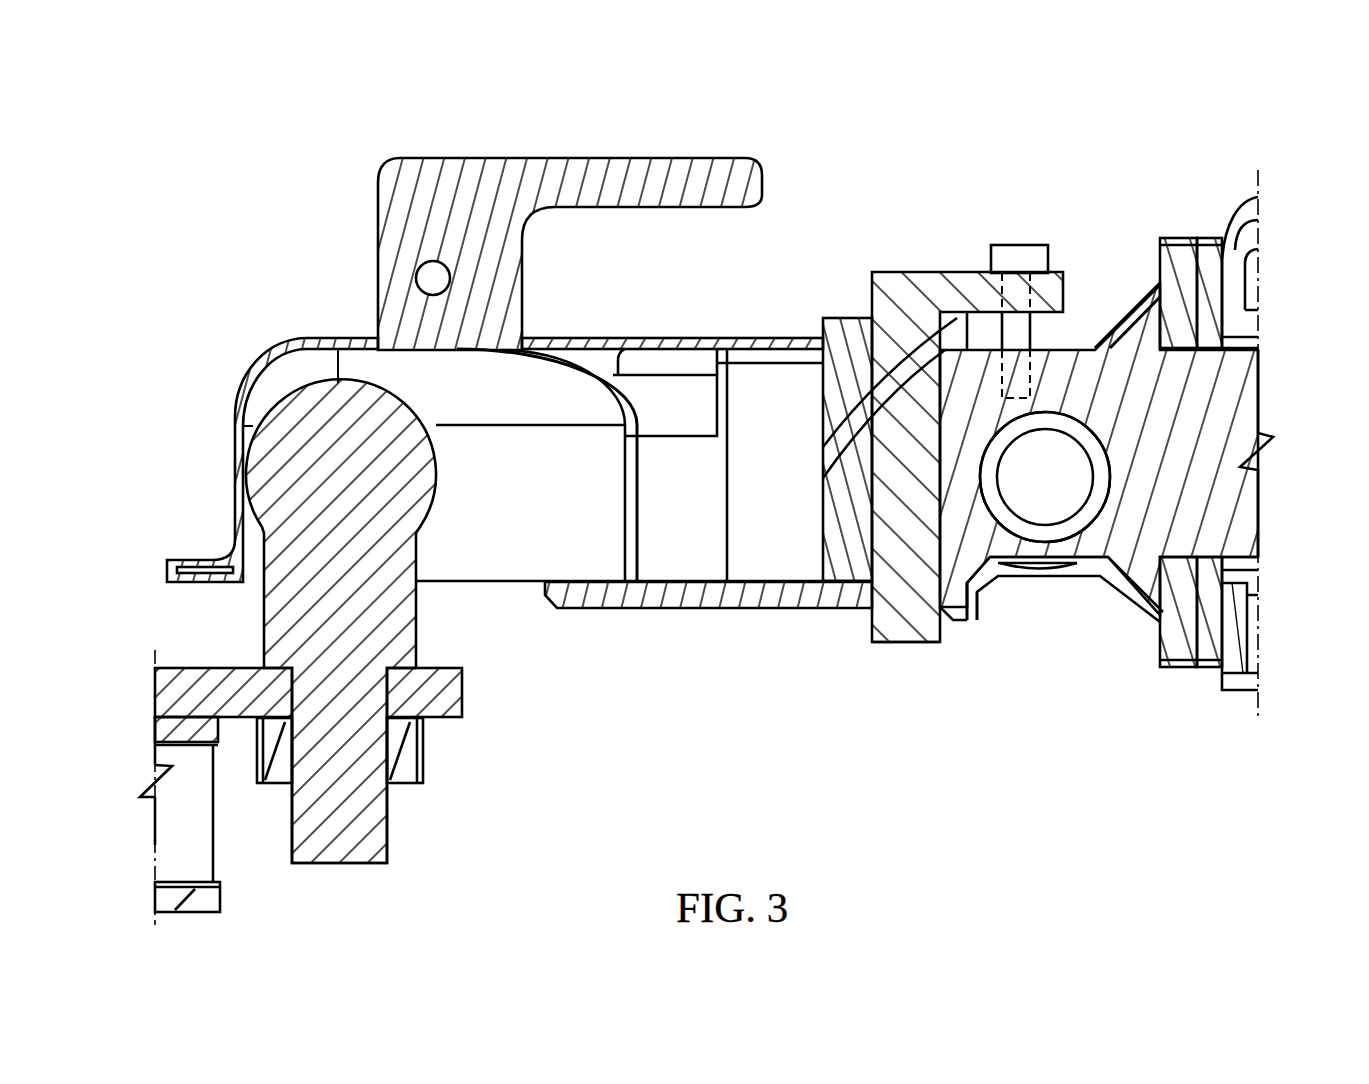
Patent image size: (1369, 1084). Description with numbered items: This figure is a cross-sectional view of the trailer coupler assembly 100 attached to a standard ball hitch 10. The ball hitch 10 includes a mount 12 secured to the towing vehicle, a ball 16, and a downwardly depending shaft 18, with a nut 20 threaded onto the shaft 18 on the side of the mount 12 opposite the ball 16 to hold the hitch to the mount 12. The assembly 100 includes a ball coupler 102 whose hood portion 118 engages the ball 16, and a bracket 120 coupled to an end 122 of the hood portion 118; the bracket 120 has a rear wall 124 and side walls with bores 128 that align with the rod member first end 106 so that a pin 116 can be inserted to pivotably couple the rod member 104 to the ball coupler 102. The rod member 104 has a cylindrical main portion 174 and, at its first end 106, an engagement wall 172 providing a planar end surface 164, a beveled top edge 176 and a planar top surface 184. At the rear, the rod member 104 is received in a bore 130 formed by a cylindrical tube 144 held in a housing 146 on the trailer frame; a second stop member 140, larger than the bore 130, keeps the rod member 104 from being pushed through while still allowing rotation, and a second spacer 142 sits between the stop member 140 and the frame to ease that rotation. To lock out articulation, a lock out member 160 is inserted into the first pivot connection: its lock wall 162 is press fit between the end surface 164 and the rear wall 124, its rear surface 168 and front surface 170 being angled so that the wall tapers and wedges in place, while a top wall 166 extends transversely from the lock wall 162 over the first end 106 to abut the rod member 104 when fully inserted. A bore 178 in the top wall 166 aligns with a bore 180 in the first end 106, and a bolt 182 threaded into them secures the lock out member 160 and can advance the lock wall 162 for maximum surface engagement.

The ball hitch 10 is at (135, 658).
The mount 12 is at (175, 692).
The ball 16 is at (300, 455).
The shaft 18 is at (338, 862).
The nut 20 is at (400, 775).
The trailer coupler assembly 100 is at (783, 110).
The ball coupler 102 is at (300, 340).
The rod member 104 is at (1247, 415).
The first end 106 is at (1000, 548).
The pin 116 is at (1065, 475).
The hood portion 118 is at (262, 372).
The bracket 120 is at (843, 323).
The end 122 is at (720, 338).
The rear wall 124 is at (823, 338).
The bores 128 is at (1077, 550).
The bore 130 is at (1240, 560).
The second stop member 140 is at (1177, 280).
The second spacer 142 is at (1207, 320).
The cylindrical tube 144 is at (1247, 575).
The housing 146 is at (1235, 690).
The lock out member 160 is at (888, 272).
The lock wall 162 is at (902, 643).
The end surface 164 is at (823, 474).
The top wall 166 is at (958, 272).
The rear surface 168 is at (945, 643).
The front surface 170 is at (868, 620).
The engagement wall 172 is at (972, 608).
The cylindrical main portion 174 is at (1245, 490).
The top edge 176 is at (822, 450).
The bore 178 is at (1040, 285).
The bore 180 is at (1028, 388).
The bolt 182 is at (1015, 245).
The top surface 184 is at (1105, 355).